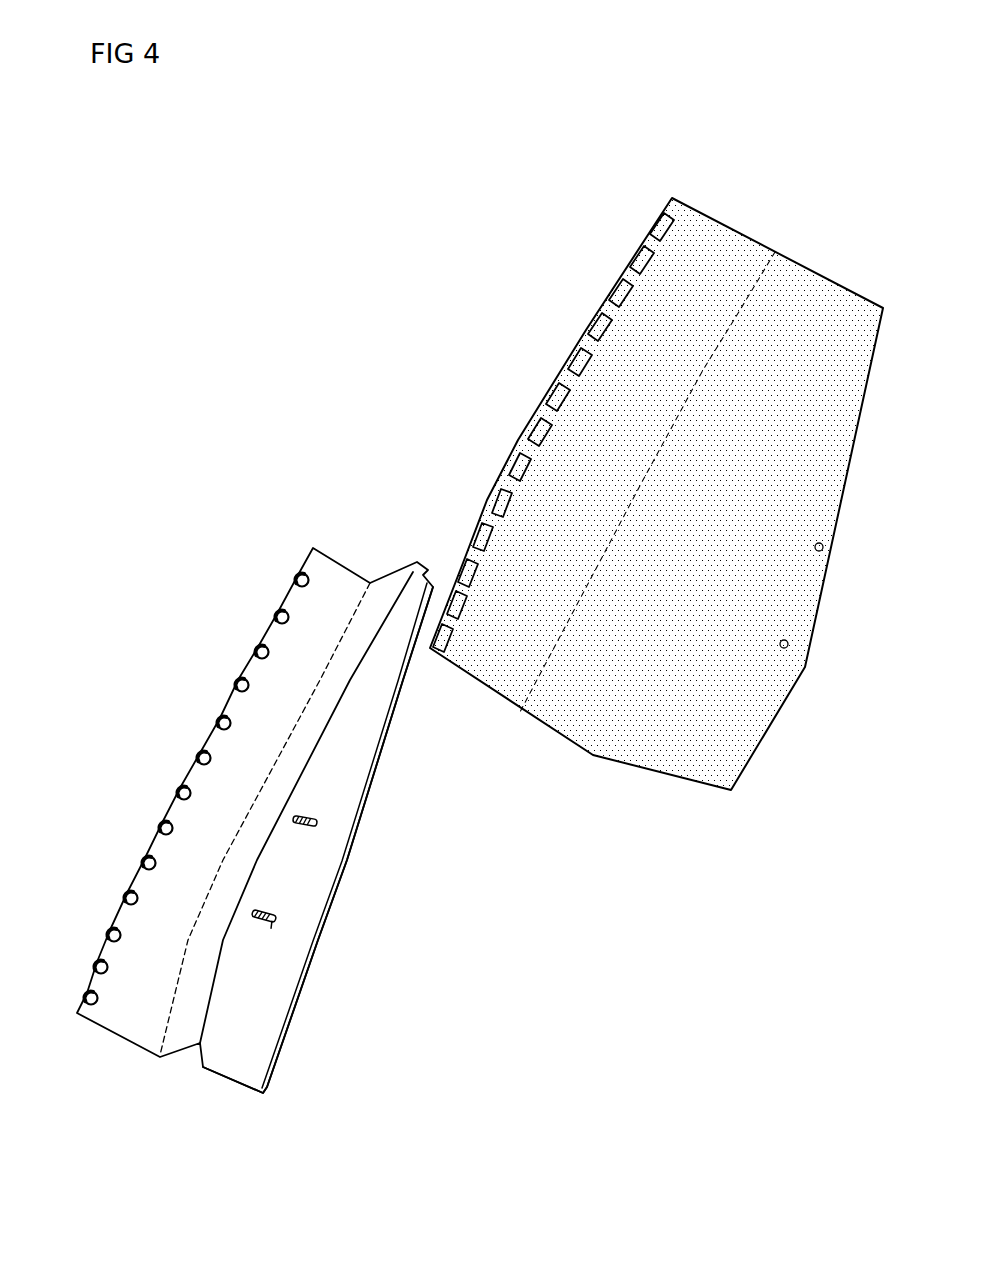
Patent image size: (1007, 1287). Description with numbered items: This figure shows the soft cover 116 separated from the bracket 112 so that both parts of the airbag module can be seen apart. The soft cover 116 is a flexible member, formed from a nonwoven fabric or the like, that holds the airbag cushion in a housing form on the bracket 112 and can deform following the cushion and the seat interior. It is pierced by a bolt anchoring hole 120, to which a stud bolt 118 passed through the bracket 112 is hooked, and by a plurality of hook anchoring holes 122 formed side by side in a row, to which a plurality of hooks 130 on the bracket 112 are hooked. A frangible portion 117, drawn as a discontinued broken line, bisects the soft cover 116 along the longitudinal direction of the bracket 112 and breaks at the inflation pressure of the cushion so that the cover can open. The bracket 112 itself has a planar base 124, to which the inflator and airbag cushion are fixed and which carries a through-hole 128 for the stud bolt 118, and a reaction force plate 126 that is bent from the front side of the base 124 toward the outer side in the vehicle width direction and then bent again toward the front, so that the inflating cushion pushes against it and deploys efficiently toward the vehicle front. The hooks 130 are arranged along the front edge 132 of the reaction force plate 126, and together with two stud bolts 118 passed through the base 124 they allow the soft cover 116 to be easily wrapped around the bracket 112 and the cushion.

The bracket 112 is at (333, 580).
The soft cover 116 is at (755, 240).
The frangible portion 117 is at (757, 280).
The stud bolt 118 is at (308, 827).
The bolt anchoring hole 120 is at (830, 552).
The hook anchoring holes 122 is at (660, 222).
The base 124 is at (355, 768).
The reaction force plate 126 is at (230, 742).
The through-hole 128 is at (318, 819).
The hooks 130 is at (318, 578).
The front edge 132 is at (280, 593).